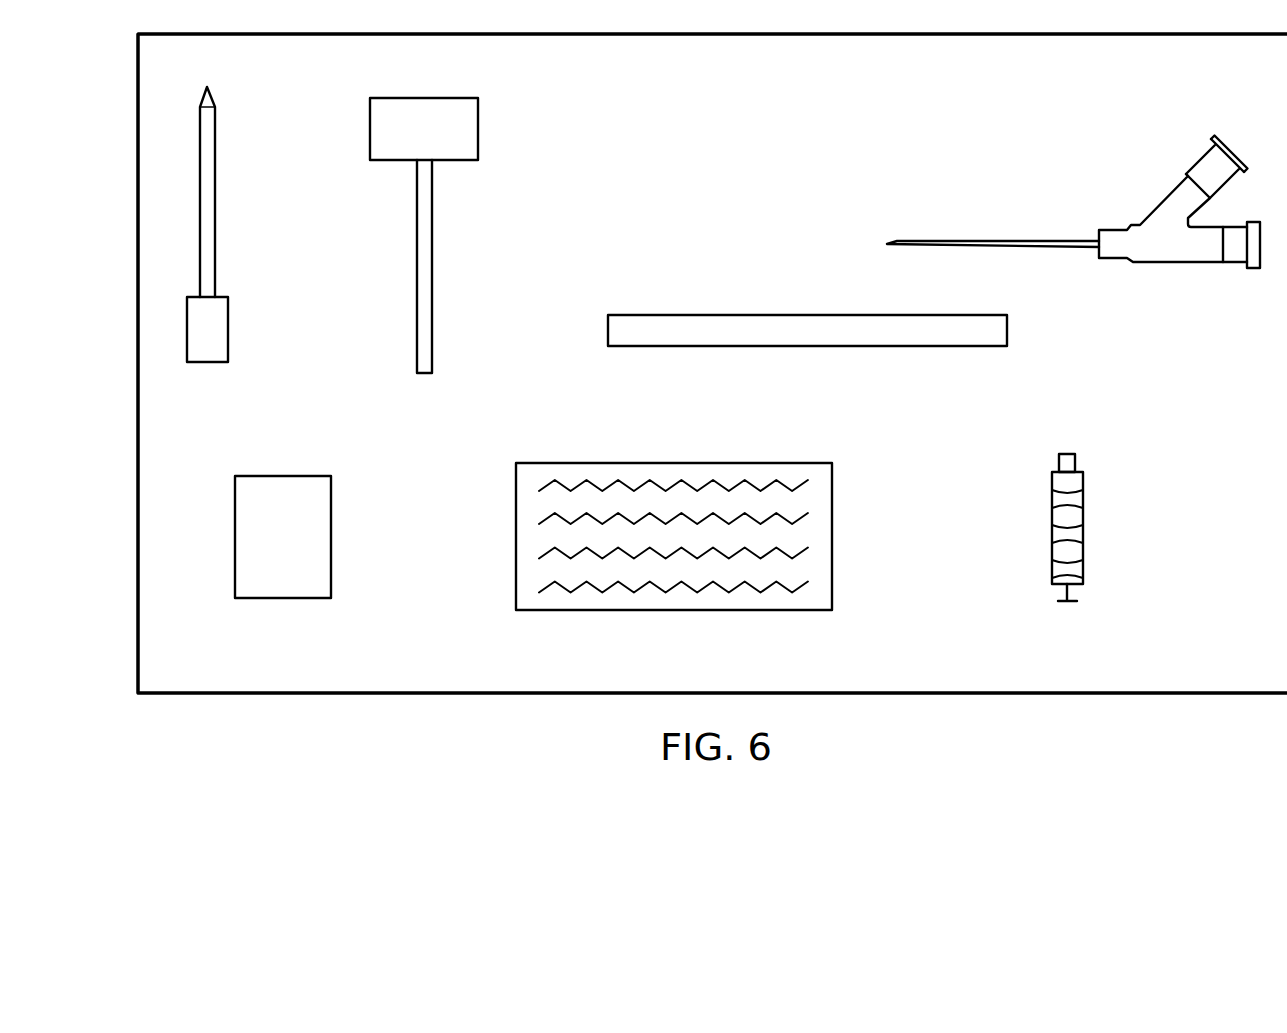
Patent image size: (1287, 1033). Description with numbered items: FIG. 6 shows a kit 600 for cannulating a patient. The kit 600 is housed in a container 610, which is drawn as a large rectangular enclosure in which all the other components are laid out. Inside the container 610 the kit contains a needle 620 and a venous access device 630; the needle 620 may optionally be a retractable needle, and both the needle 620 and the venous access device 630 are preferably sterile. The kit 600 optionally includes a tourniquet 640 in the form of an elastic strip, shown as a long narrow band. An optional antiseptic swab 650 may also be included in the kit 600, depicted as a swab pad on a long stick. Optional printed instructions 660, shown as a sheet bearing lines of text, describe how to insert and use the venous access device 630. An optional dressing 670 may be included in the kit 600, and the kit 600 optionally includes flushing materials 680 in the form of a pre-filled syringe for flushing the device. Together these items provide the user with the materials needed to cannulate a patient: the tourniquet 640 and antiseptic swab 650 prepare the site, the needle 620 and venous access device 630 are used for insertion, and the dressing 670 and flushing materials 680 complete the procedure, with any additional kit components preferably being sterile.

The kit 600 is at (125, 258).
The container 610 is at (236, 693).
The needle 620 is at (228, 323).
The venous access device 630 is at (1175, 262).
The tourniquet 640 is at (967, 346).
The antiseptic swab 650 is at (432, 233).
The printed instructions 660 is at (767, 610).
The dressing 670 is at (331, 536).
The flushing materials 680 is at (1083, 535).